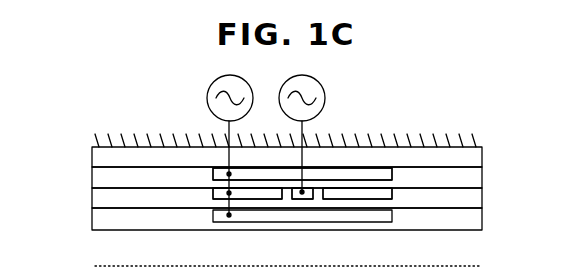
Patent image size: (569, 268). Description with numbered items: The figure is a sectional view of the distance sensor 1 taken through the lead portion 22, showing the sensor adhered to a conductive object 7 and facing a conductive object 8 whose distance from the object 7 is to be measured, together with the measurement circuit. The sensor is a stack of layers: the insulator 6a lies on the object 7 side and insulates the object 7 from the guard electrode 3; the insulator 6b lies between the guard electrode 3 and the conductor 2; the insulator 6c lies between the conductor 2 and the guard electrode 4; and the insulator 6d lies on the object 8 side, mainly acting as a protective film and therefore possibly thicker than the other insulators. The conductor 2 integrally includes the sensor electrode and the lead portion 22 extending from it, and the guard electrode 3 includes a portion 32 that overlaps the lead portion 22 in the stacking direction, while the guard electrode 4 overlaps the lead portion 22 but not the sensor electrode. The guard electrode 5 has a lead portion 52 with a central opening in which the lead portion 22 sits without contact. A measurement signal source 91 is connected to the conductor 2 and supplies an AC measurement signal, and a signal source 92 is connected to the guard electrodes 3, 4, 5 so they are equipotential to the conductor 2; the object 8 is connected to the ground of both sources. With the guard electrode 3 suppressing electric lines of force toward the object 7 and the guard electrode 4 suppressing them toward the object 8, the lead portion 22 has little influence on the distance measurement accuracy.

The distance sensor 1 is at (294, 170).
The conductor 2 is at (287, 205).
The lead portion 22 is at (297, 203).
The guard electrode 3 is at (358, 162).
The portion of guard electrode 32 is at (283, 167).
The guard electrode 4 is at (362, 222).
The guard electrode 5 is at (207, 179).
The lead portion 52 is at (212, 200).
The insulator 6a is at (473, 157).
The insulator 6b is at (473, 175).
The insulator 6c is at (475, 193).
The insulator 6d is at (93, 221).
The object 7 is at (383, 133).
The object 8 is at (462, 263).
The measurement signal source 91 is at (322, 83).
The signal source 92 is at (208, 81).